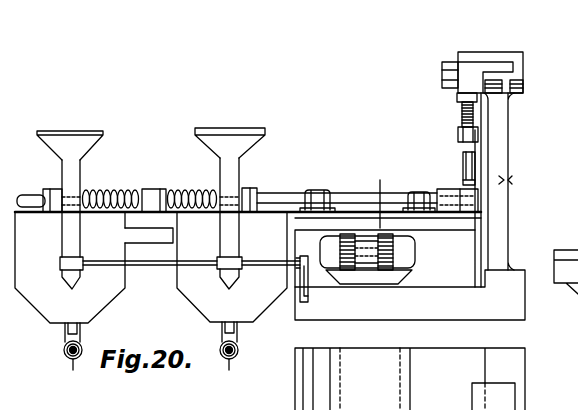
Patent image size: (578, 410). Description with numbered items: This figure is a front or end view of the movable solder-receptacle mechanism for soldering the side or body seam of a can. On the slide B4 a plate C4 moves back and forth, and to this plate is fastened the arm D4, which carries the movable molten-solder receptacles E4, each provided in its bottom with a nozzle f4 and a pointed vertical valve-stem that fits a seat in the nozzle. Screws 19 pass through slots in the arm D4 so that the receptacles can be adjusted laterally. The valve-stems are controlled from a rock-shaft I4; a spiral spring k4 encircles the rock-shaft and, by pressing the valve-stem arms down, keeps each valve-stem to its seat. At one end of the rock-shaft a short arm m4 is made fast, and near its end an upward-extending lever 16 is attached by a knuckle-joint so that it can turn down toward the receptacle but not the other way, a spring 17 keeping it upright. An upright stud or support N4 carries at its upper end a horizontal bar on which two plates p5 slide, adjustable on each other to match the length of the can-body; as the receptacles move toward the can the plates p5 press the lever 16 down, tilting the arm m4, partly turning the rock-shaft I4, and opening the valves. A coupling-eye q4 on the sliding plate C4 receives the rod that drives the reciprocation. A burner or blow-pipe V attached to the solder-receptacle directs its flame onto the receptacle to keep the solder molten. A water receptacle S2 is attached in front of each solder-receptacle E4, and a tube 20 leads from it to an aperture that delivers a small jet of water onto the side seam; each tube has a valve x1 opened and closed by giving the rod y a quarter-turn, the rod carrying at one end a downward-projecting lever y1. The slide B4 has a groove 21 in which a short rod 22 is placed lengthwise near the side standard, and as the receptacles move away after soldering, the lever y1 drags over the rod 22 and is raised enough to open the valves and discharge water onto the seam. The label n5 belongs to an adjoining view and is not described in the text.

The rock-shaft I4 is at (297, 200).
The spiral spring k4 is at (113, 193).
The water receptacle S2 is at (70, 131).
The tube 20 is at (69, 237).
The valve x1 is at (73, 264).
The movable molten-solder receptacle E4 is at (151, 267).
The nozzle f4 is at (63, 326).
The burner or blow-pipe V is at (151, 363).
The rod y is at (143, 263).
The downward-projecting lever y1 is at (291, 294).
The groove 21 is at (309, 298).
The short rod 22 is at (303, 282).
The sliding plate C4 is at (385, 258).
The slide B4 is at (410, 295).
The coupling-eye q4 is at (352, 273).
The arm D4 is at (382, 195).
The screws 19 is at (316, 194).
The short arm m4 is at (478, 205).
The upright stud or support N4 is at (503, 150).
The plates p5 is at (478, 66).
The upward-extending lever 16 is at (462, 134).
The spring 17 is at (463, 160).
The frame n5 is at (410, 379).